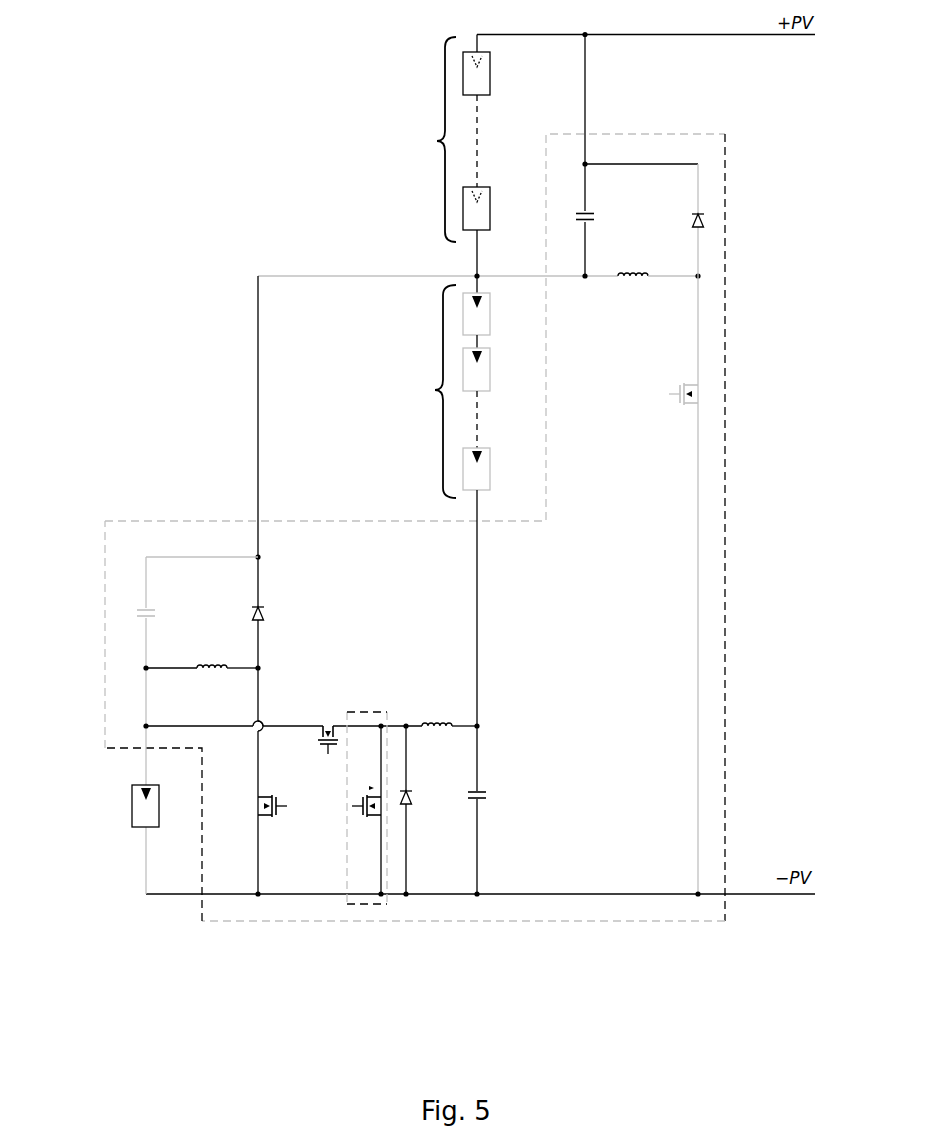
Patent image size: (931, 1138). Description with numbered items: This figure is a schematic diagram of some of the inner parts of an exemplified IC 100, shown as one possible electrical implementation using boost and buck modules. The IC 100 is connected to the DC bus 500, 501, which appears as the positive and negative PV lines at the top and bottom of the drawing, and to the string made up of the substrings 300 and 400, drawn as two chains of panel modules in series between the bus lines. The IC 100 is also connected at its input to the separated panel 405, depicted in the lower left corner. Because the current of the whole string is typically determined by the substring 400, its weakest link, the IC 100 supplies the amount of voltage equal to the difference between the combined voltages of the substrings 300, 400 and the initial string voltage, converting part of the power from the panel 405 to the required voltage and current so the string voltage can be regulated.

The IC 100 is at (222, 521).
The substring 300 is at (435, 390).
The substring 400 is at (437, 141).
The separated panel 405 is at (135, 810).
The DC bus 500 is at (713, 34).
The DC bus 501 is at (732, 894).